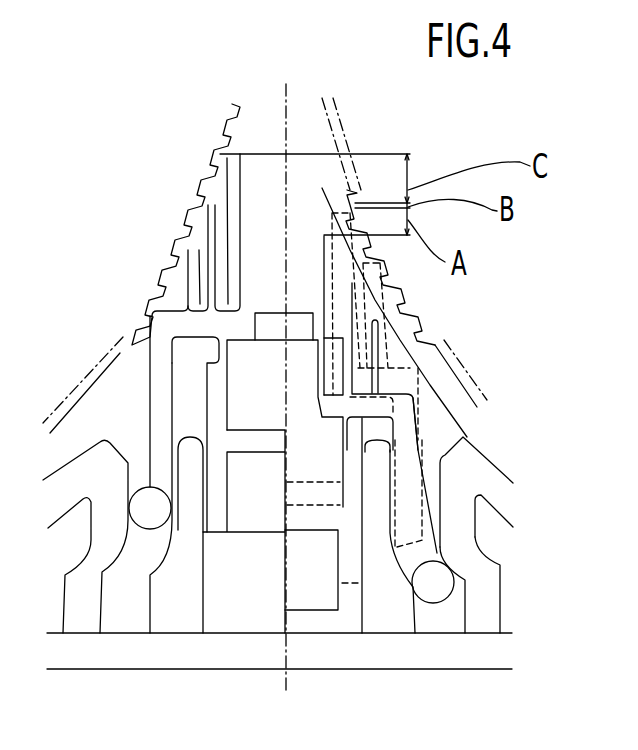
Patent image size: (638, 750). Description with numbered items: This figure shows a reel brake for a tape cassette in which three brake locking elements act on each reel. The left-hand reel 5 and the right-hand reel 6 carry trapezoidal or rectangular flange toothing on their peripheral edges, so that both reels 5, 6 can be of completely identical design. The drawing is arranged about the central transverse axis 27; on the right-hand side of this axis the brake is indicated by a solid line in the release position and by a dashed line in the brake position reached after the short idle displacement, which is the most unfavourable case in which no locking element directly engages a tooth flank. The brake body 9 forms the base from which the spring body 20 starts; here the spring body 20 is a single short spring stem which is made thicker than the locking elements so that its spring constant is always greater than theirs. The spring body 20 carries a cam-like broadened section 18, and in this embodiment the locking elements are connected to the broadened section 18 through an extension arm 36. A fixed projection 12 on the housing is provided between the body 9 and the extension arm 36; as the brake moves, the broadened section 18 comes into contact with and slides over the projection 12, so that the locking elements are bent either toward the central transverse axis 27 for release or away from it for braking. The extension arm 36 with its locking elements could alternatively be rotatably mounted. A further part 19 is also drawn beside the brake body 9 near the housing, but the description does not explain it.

The first ratchet wheel 5 is at (115, 284).
The second ratchet wheel 6 is at (472, 332).
The hub 9 is at (347, 563).
The housing 12 is at (377, 533).
The ball 18 is at (143, 503).
The spring stem 19 is at (140, 553).
The guide 20 is at (350, 421).
The axis 27 is at (287, 86).
The pawl 36 is at (410, 478).